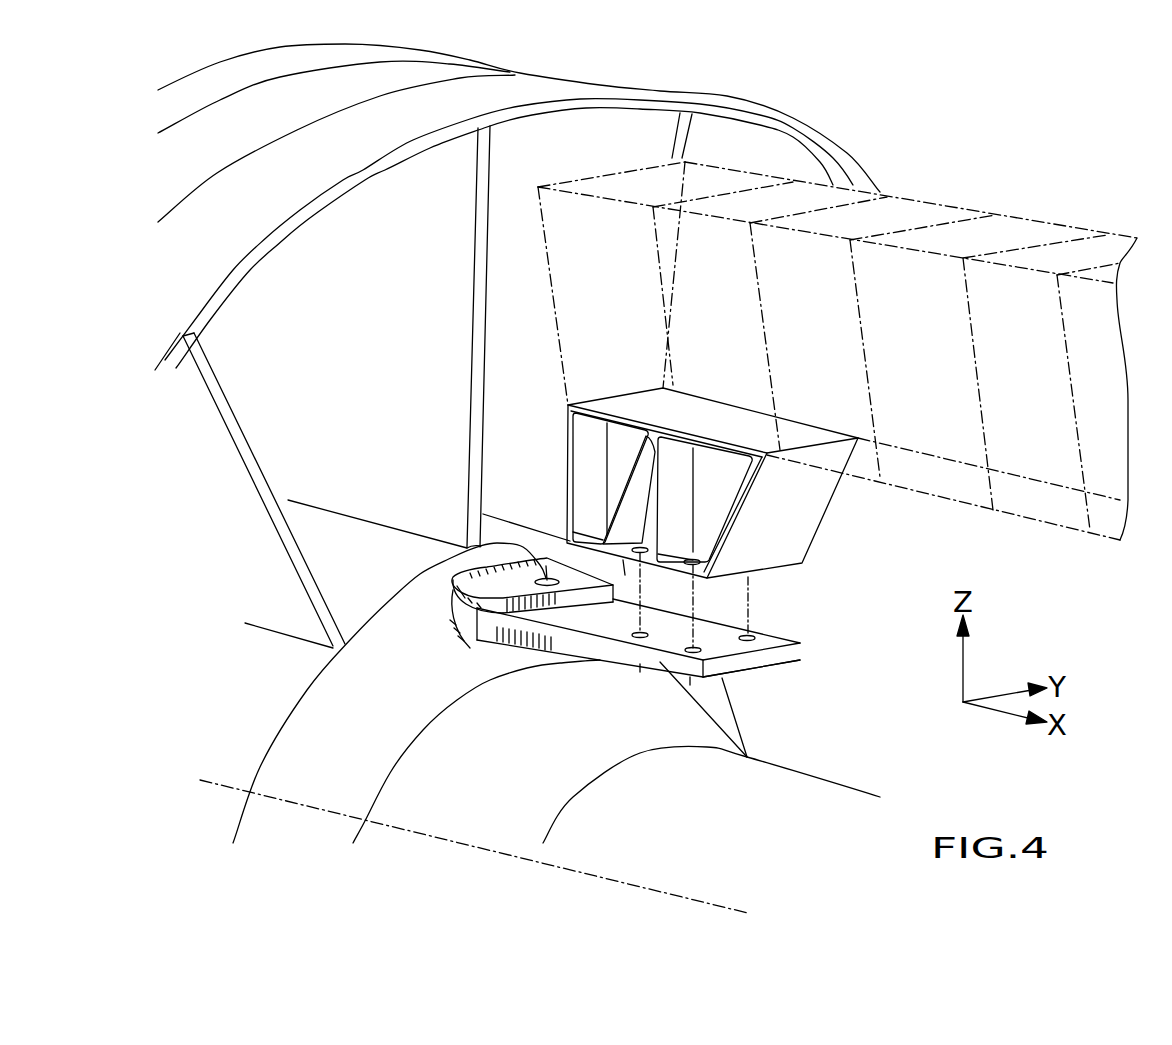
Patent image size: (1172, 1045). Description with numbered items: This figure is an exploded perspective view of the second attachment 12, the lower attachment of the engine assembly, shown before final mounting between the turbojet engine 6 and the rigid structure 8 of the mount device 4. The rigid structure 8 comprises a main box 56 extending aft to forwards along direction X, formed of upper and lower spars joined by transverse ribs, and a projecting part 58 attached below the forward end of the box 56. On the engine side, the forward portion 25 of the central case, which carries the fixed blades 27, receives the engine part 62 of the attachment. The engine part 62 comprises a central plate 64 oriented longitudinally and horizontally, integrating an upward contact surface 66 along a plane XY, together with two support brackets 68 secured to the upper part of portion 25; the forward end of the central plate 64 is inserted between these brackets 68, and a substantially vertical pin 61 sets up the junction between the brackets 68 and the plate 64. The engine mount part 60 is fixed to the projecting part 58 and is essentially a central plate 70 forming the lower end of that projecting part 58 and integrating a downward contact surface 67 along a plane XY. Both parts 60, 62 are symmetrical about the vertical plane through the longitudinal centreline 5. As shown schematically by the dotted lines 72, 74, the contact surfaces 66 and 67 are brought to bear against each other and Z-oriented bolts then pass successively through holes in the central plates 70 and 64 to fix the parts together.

The mount device 4 is at (1048, 172).
The rigid structure 8 is at (928, 203).
The main box 56 is at (1035, 512).
The turbojet engine 6 is at (216, 652).
The fixed blades 27 is at (232, 413).
The portion of the central case 25 is at (332, 716).
The pin 61 is at (467, 548).
The longitudinal centreline 5 is at (645, 883).
The second attachment 12 is at (822, 737).
The engine mount part 60 is at (812, 588).
The projecting part 58 is at (590, 455).
The engine part 62 is at (637, 607).
The central plate 70 is at (633, 616).
The contact surface 67 is at (545, 565).
The central plate 64 is at (668, 662).
The dotted line 72 is at (703, 652).
The contact surface 66 is at (770, 640).
The support brackets 68 is at (477, 640).
The dotted line 74 is at (623, 560).